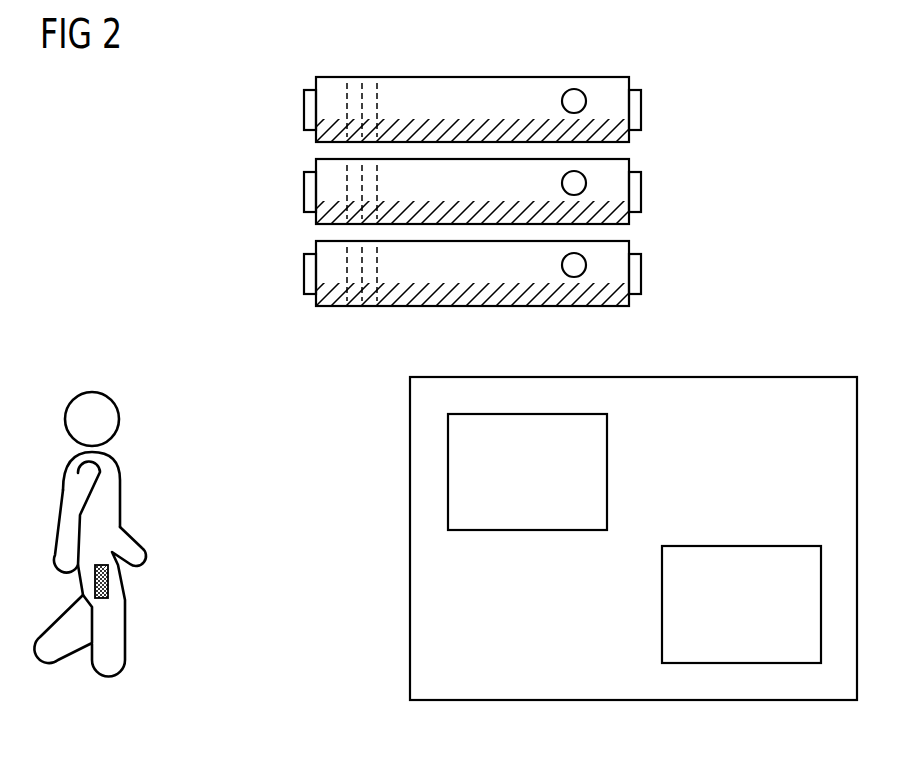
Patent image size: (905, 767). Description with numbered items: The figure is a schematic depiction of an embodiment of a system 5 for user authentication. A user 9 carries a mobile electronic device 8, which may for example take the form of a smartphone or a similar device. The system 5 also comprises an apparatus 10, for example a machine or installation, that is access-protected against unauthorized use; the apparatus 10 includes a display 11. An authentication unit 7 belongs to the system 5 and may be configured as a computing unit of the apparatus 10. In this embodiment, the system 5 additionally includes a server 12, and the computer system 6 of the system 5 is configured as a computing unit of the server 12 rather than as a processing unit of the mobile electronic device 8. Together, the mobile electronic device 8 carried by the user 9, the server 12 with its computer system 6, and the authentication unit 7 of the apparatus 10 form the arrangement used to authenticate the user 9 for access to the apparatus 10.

The system 5 is at (295, 484).
The computer system 6 is at (511, 187).
The server 12 is at (660, 117).
The authentication unit 7 is at (662, 609).
The mobile electronic device 8 is at (108, 581).
The user 9 is at (96, 376).
The apparatus 10 is at (410, 549).
The display 11 is at (528, 540).